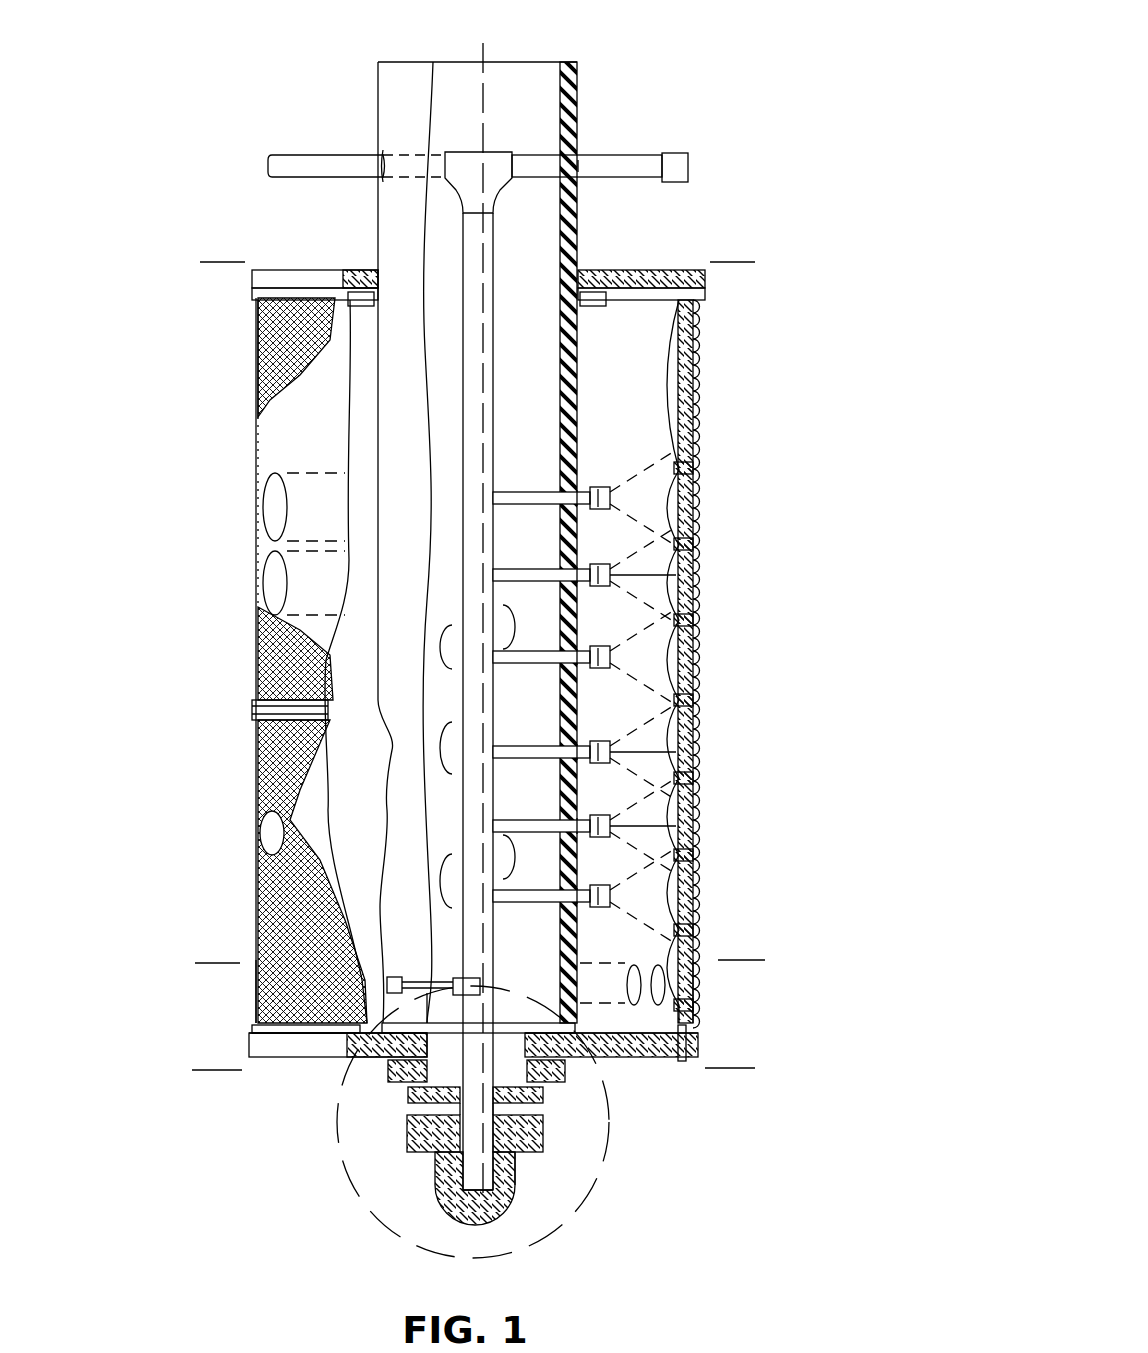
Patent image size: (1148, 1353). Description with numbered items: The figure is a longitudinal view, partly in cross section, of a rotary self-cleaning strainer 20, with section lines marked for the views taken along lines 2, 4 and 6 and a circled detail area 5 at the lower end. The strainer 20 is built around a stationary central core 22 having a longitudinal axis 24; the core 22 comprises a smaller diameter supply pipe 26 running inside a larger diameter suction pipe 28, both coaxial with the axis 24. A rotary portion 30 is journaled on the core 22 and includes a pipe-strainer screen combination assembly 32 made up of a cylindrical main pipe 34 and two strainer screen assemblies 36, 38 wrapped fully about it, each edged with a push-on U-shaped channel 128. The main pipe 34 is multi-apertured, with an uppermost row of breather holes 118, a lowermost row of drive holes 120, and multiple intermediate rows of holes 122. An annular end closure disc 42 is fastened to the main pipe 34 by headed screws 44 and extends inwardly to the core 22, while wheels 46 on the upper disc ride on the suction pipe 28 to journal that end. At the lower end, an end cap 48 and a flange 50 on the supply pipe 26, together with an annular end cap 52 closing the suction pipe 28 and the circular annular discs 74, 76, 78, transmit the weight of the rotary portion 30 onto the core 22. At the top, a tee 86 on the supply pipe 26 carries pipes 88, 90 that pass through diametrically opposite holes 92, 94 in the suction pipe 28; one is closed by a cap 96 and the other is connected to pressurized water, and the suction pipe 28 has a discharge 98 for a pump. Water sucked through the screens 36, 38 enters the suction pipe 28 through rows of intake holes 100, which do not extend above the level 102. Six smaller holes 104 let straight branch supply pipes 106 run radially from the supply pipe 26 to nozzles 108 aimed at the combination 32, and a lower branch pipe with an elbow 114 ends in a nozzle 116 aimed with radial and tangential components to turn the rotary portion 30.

The rotary self-cleaning strainer 20 is at (790, 270).
The central core 22 is at (580, 60).
The longitudinal axis 24 is at (492, 98).
The supply pipe 26 is at (497, 277).
The suction pipe 28 is at (577, 100).
The rotary portion 30 is at (656, 268).
The pipe-strainer screen combination assembly 32 is at (708, 330).
The main pipe 34 is at (278, 440).
The strainer screen assembly 36 is at (254, 304).
The strainer screen assembly 38 is at (260, 726).
The end closure disc 42 is at (286, 1056).
The headed screws 44 is at (265, 270).
The wheels 46 is at (352, 276).
The end cap 48 is at (462, 1228).
The flange 50 is at (530, 1153).
The end cap 52 is at (400, 1030).
The circular annular disc 74 is at (545, 1097).
The circular annular disc 76 is at (548, 1130).
The circular annular disc 78 is at (541, 1120).
The tee 86 is at (503, 140).
The pipe 88 is at (283, 158).
The pipe 90 is at (625, 160).
The hole 92 is at (380, 162).
The hole 94 is at (588, 160).
The cap 96 is at (688, 166).
The discharge 98 is at (450, 60).
The holes 100 is at (327, 640).
The level 102 is at (772, 598).
The holes 104 is at (578, 478).
The straight branch supply pipes 106 is at (528, 492).
The nozzles 108 is at (606, 487).
The elbow 114 is at (456, 986).
The nozzle 116 is at (314, 1048).
The breather holes 118 is at (252, 352).
The drive holes 120 is at (252, 990).
The holes 122 is at (268, 514).
The U-shaped channel 128 is at (706, 301).
The section line 2- 2 is at (227, 974).
The section line 4- 4 is at (226, 1056).
The detail circle 5 is at (574, 1228).
The section line 6- 6 is at (227, 272).